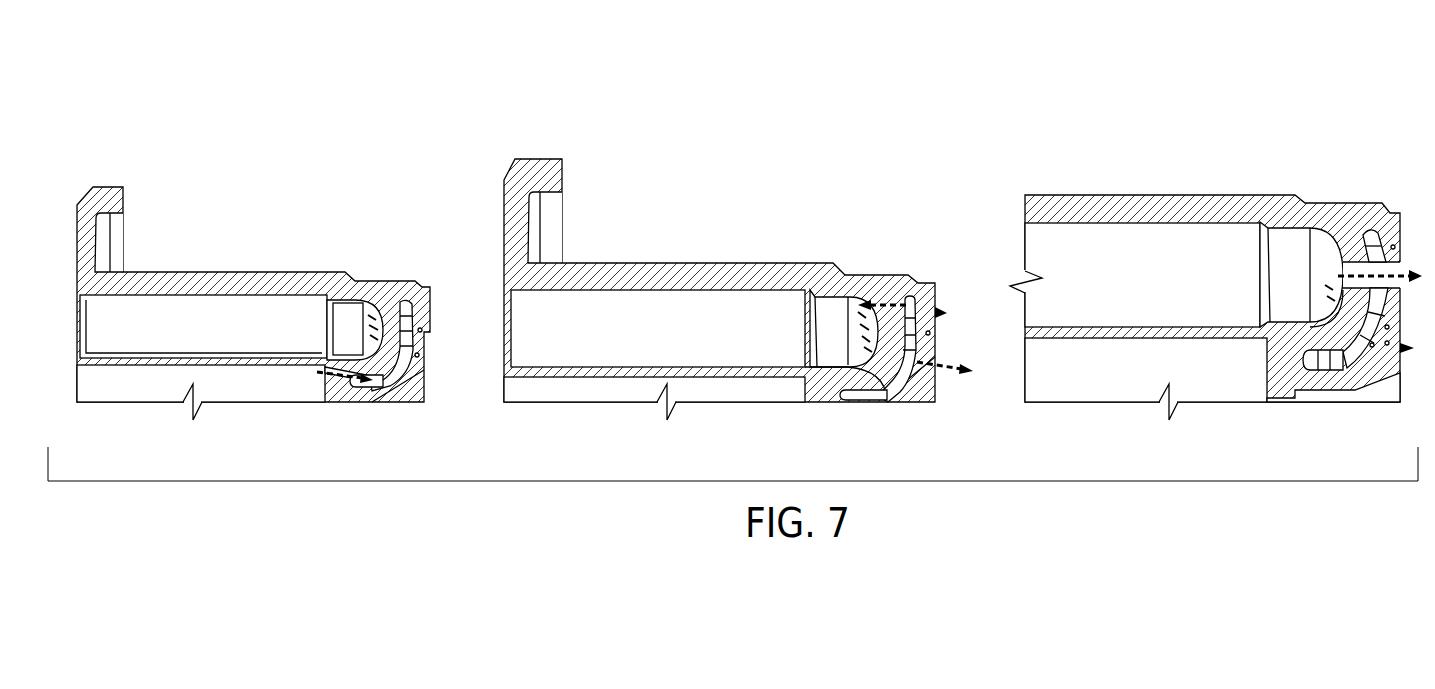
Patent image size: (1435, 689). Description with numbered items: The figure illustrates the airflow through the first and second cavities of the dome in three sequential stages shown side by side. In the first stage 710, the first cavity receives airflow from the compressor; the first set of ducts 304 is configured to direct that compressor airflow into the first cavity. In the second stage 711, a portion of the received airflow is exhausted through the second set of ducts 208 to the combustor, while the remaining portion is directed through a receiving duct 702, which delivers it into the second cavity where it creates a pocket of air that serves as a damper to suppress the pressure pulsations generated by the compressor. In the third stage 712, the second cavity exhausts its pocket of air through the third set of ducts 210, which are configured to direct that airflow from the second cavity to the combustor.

The first airflow stage 710 is at (202, 124).
The second airflow stage 711 is at (665, 141).
The third airflow stage 712 is at (1142, 108).
The first set of ducts 304 is at (342, 379).
The receiving duct 702 is at (890, 297).
The second set of ducts 208 is at (923, 377).
The third set of ducts 210 is at (1348, 250).